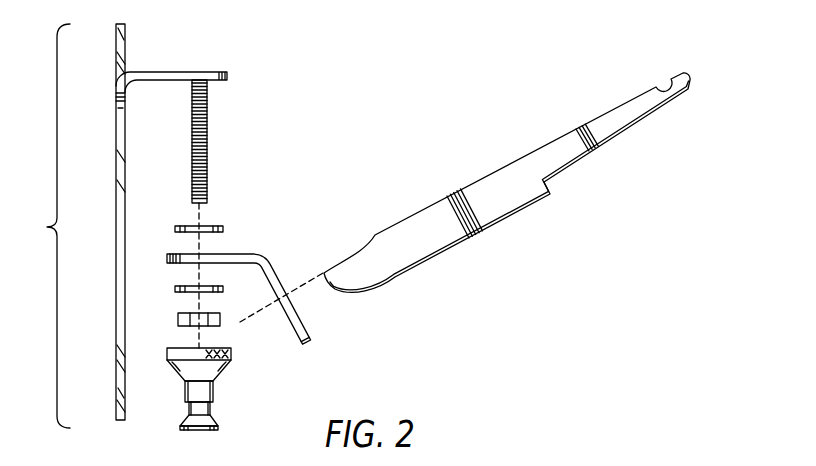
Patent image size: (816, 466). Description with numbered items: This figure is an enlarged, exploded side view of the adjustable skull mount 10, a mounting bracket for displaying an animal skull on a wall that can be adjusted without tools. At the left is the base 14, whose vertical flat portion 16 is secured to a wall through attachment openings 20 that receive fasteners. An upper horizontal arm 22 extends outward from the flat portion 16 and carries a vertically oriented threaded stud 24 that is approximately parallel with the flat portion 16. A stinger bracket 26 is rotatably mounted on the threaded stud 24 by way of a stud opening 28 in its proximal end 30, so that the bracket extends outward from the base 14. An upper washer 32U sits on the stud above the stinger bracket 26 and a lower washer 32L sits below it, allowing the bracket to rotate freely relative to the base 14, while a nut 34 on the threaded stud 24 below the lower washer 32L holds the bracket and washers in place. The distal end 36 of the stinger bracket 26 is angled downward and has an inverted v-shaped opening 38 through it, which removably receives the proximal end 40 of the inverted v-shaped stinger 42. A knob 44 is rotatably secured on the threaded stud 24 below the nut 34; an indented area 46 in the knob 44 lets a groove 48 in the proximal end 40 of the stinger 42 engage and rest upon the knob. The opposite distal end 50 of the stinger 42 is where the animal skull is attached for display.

The skull mount 10 is at (44, 226).
The base 14 is at (118, 397).
The flat portion 16 is at (120, 178).
The attachment openings 20 is at (123, 47).
The upper horizontal arm 22 is at (215, 72).
The threaded stud 24 is at (205, 137).
The stinger bracket 26 is at (275, 268).
The stud opening 28 is at (203, 253).
The proximal end 30 is at (167, 258).
The upper washer 32U is at (217, 225).
The lower washer 32L is at (224, 290).
The nut 34 is at (178, 322).
The distal end 36 is at (311, 349).
The inverted v-shaped opening 38 is at (290, 297).
The proximal end 40 is at (368, 273).
The stinger 42 is at (490, 187).
The knob 44 is at (177, 365).
The indented area 46 is at (213, 412).
The groove 48 is at (355, 258).
The distal end 50 is at (678, 77).